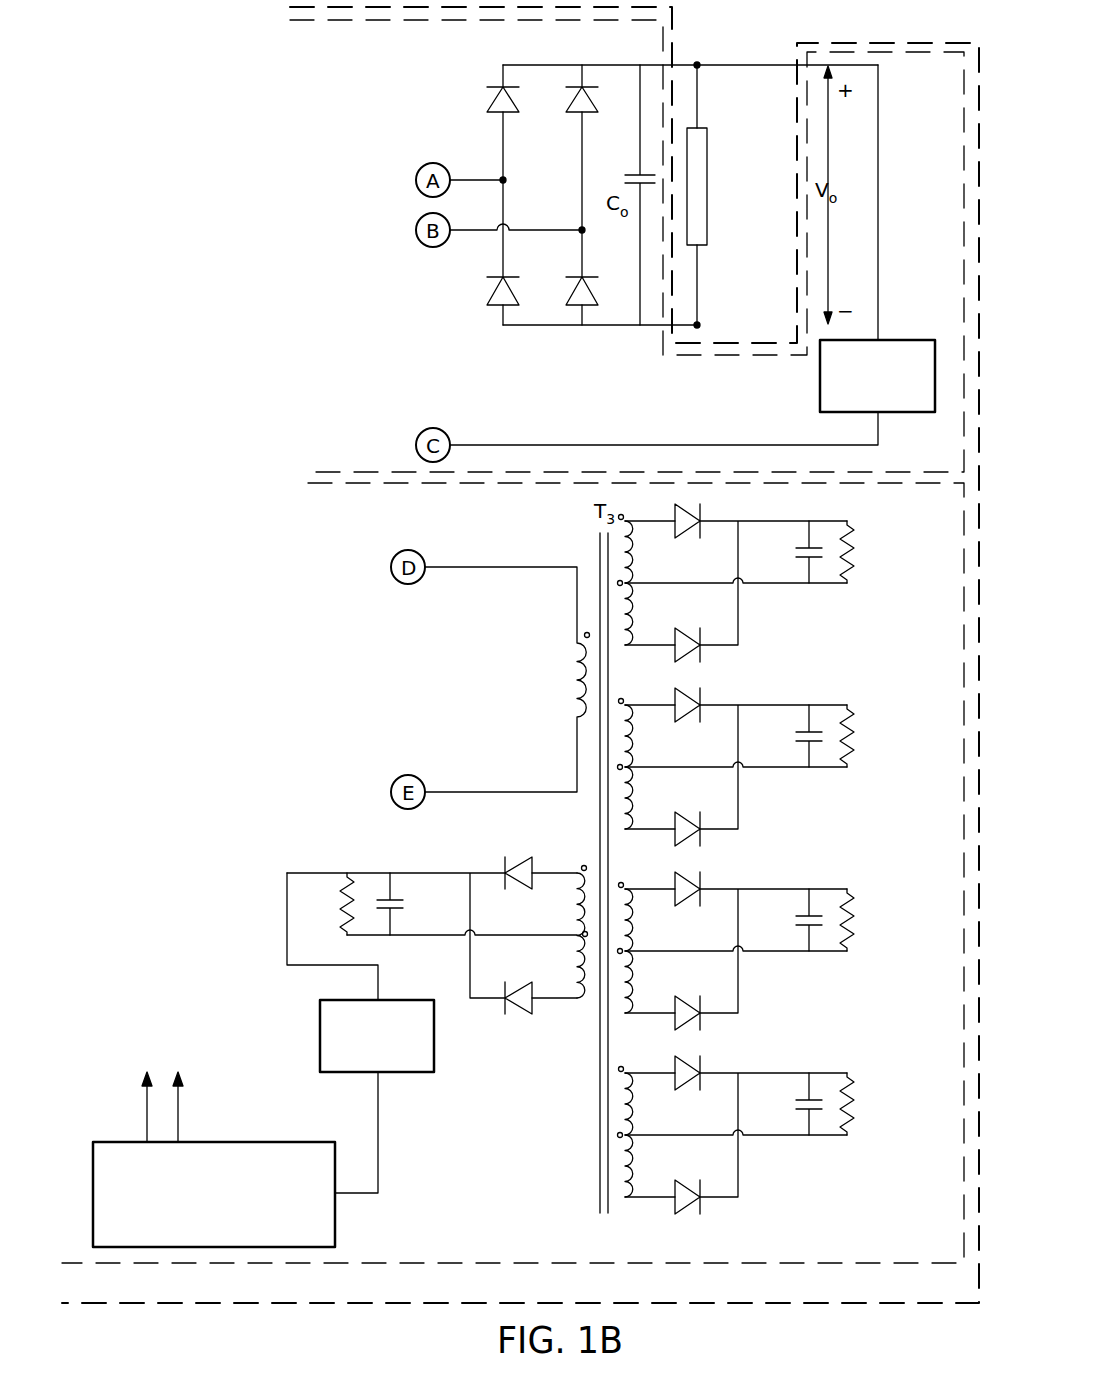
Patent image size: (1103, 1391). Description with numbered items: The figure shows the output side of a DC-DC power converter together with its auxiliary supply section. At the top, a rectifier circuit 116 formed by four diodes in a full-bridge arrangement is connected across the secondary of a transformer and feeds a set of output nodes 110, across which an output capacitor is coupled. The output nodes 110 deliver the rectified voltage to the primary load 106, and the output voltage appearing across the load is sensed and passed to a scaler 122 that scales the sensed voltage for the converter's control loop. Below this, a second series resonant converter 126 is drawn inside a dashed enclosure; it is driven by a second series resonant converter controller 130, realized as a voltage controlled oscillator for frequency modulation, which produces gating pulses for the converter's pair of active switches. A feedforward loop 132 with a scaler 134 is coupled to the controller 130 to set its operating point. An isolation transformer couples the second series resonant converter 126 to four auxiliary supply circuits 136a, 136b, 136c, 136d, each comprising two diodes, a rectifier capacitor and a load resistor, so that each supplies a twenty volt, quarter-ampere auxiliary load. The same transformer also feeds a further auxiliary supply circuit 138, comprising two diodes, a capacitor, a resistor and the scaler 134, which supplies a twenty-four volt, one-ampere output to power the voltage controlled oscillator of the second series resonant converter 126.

The rectifier circuit 116 is at (612, 63).
The set of output nodes 110 is at (697, 63).
The primary load 106 is at (707, 148).
The scaler 122 is at (820, 382).
The auxiliary supply circuit 138 is at (583, 853).
The feedforward loop 132 is at (308, 999).
The scaler 134 is at (434, 1040).
The second series resonant converter controller 130 is at (335, 1213).
The second series resonant converter 126 is at (876, 1266).
The auxiliary supply circuit 136a is at (886, 510).
The auxiliary supply circuit 136b is at (886, 694).
The auxiliary supply circuit 136c is at (886, 878).
The auxiliary supply circuit 136d is at (886, 1062).